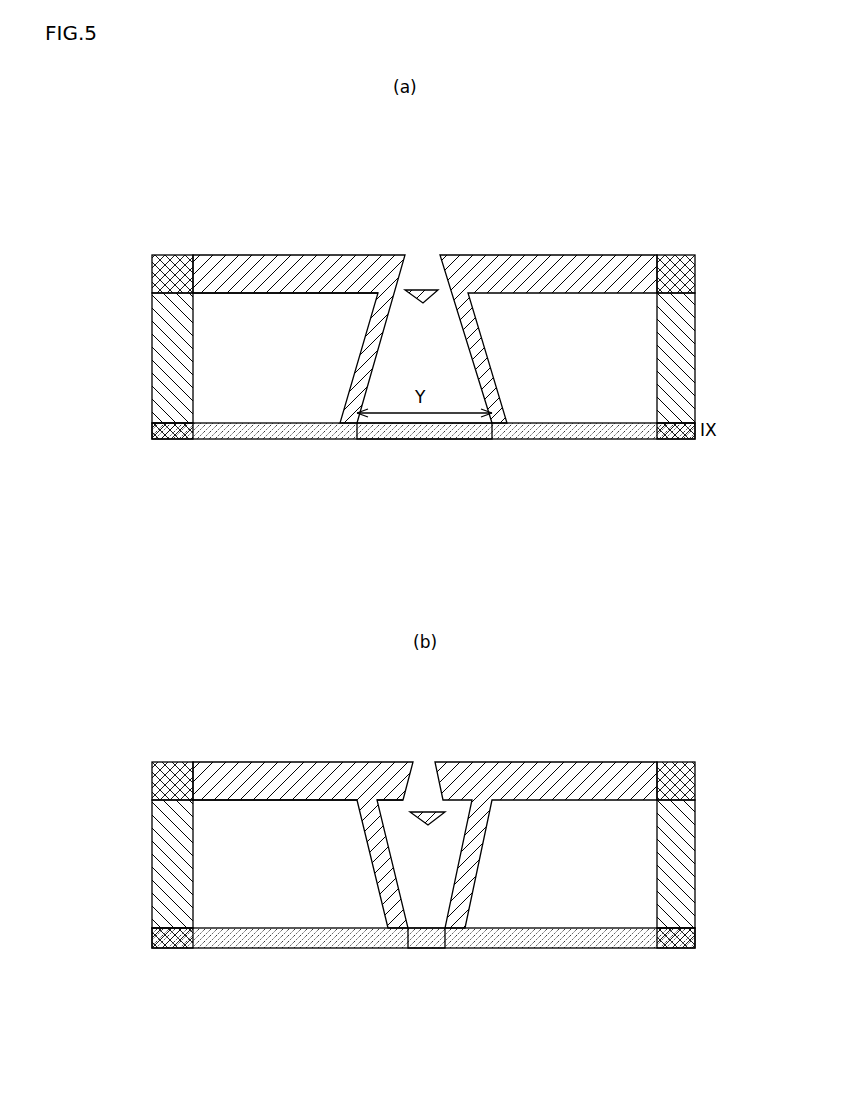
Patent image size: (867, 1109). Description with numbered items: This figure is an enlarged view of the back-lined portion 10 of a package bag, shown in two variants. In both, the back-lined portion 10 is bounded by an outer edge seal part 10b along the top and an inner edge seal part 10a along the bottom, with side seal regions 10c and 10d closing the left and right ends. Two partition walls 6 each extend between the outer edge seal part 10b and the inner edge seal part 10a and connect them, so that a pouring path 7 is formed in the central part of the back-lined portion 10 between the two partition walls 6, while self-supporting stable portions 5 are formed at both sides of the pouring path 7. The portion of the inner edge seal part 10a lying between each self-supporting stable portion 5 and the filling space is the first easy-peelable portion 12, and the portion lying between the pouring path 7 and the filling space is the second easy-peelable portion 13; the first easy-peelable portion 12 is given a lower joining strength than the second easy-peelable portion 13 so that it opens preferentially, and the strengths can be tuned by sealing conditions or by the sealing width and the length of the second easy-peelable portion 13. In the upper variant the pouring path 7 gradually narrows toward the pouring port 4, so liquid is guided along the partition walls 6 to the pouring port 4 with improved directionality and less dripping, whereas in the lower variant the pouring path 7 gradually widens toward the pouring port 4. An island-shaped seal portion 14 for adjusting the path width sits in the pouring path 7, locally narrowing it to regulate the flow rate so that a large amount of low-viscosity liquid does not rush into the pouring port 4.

The pouring port 4 is at (432, 255).
The self-supporting stable portion 5 is at (243, 360).
The partition wall 6 is at (368, 328).
The pouring path 7 is at (392, 380).
The back-lined portion 10 is at (422, 599).
The inner edge seal part 10a is at (423, 742).
The outer edge seal part 10b is at (247, 255).
The right side wall 10c is at (672, 350).
The left side wall 10d is at (167, 368).
The first easy-peelable portion 12 is at (250, 432).
The second easy-peelable portion 13 is at (445, 428).
The island-shaped seal portion for adjusting a path width 14 is at (413, 290).